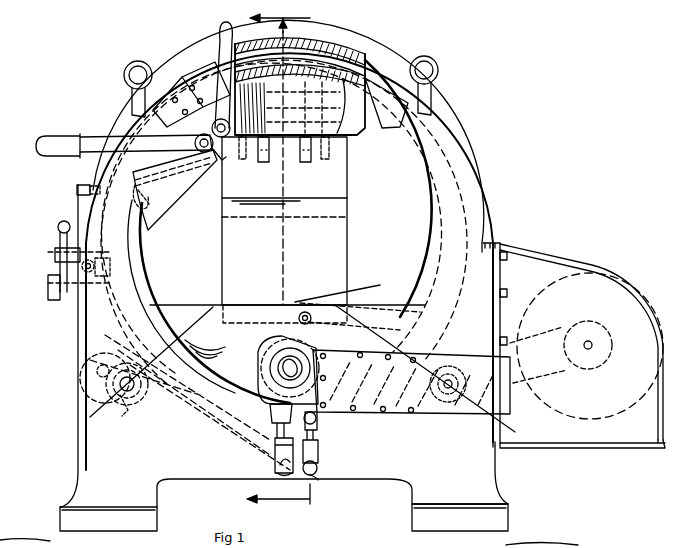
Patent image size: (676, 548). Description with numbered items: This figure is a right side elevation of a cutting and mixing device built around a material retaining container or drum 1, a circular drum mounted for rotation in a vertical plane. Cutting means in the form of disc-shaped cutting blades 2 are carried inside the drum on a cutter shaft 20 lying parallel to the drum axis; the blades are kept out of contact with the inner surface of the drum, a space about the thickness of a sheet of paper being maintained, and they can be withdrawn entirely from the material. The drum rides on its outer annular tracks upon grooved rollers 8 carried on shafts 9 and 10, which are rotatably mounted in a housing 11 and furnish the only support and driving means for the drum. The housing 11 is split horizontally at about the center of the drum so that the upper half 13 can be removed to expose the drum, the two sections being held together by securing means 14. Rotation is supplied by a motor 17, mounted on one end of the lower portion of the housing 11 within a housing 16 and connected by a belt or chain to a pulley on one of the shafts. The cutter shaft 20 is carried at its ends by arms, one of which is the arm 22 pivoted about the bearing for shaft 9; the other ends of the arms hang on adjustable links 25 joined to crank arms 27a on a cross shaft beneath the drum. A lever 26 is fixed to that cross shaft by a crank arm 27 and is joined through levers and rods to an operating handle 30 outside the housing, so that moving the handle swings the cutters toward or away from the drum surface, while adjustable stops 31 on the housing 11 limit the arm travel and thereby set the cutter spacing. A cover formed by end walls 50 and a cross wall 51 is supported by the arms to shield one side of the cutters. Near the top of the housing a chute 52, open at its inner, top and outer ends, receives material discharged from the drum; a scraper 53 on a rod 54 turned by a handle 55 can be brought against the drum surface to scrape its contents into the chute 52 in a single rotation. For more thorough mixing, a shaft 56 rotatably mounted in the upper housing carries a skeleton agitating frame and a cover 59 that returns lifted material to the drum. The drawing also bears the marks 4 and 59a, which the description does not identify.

The material retaining container or drum 1 is at (331, 93).
The cutting means (cutting blades) 2 is at (300, 316).
The section line arrows 4 is at (288, 259).
The grooved rollers 8 is at (100, 365).
The shaft 9 is at (446, 392).
The shaft 10 is at (120, 384).
The housing 11 is at (108, 490).
The upper half of the housing 13 is at (117, 120).
The securing means 14 is at (78, 187).
The motor housing 16 is at (556, 257).
The motor 17 is at (615, 288).
The cutter shaft 20 is at (263, 387).
The arm 22 is at (345, 348).
The adjustable links 25 is at (318, 445).
The lever 26 is at (190, 406).
The crank arm 27 is at (286, 485).
The crank arms 27a is at (336, 464).
The operating handle 30 is at (58, 263).
The adjustable stops 31 is at (277, 437).
The end walls 50 is at (355, 302).
The cross wall 51 is at (360, 316).
The chute 52 is at (330, 178).
The scraper 53 is at (344, 82).
The rod 54 is at (227, 140).
The handle 55 is at (82, 133).
The shaft 56 is at (213, 150).
The cover 59 is at (165, 218).
The cam hook 59a is at (157, 197).